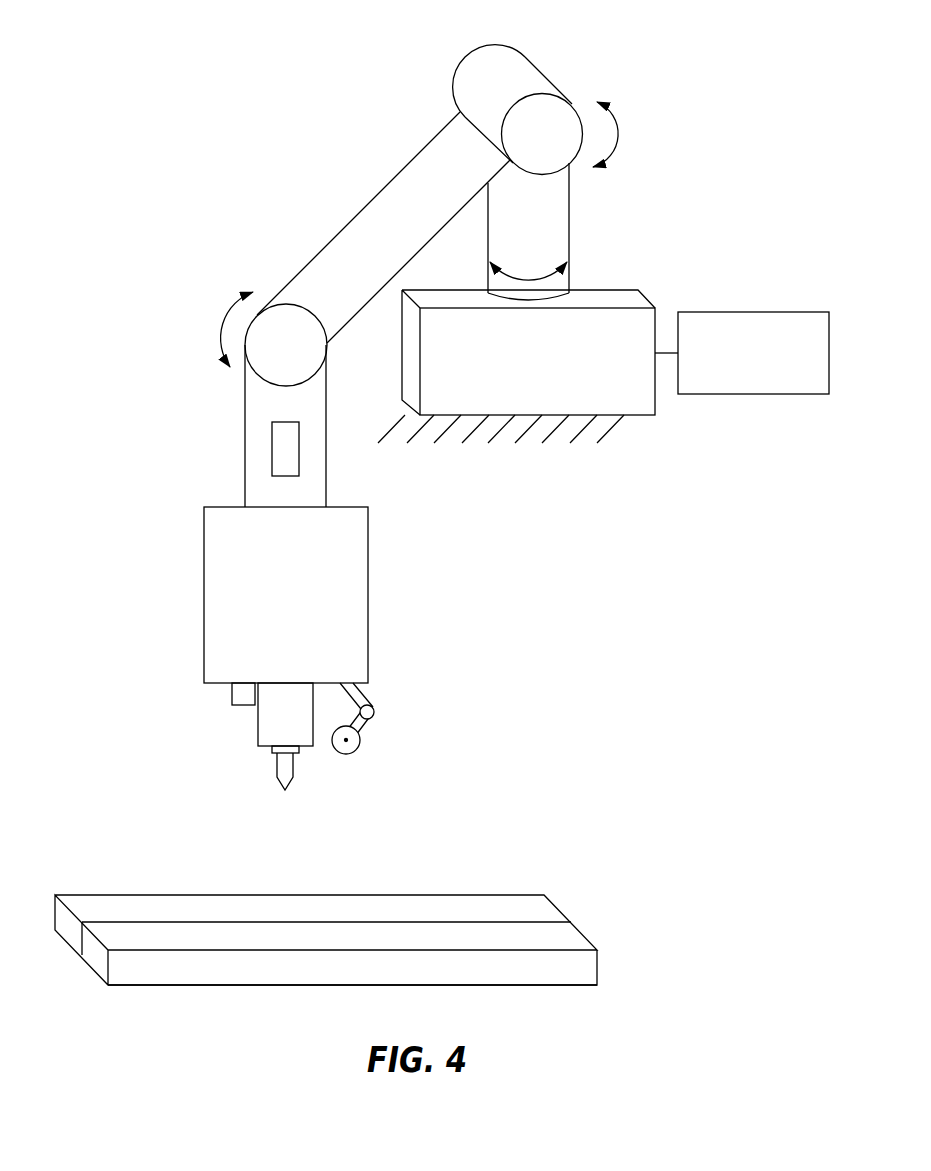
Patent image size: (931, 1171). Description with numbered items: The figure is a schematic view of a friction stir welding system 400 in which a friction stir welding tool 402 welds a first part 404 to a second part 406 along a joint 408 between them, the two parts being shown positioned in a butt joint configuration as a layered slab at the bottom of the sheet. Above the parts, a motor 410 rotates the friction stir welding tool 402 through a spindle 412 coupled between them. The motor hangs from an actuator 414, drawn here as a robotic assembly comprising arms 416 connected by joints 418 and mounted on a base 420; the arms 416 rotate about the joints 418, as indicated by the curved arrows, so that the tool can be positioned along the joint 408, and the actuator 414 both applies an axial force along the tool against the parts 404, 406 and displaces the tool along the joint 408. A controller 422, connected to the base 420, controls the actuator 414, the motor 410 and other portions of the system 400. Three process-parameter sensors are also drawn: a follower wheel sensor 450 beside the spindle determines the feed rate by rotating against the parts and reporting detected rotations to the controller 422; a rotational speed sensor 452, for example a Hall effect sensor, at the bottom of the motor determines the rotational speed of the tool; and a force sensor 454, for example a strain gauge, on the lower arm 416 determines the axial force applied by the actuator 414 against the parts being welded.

The friction stir welding system 400 is at (177, 82).
The friction stir welding tool 402 is at (263, 778).
The first part 404 is at (562, 912).
The second part 406 is at (584, 933).
The joint 408 is at (503, 922).
The motor 410 is at (204, 600).
The spindle 412 is at (258, 727).
The actuator 414 is at (338, 177).
The arms 416 is at (335, 235).
The joints 418 is at (540, 72).
The base 420 is at (655, 415).
The controller 422 is at (720, 312).
The follower wheel sensor 450 is at (357, 748).
The rotational speed sensor 452 is at (232, 692).
The force sensor 454 is at (272, 447).